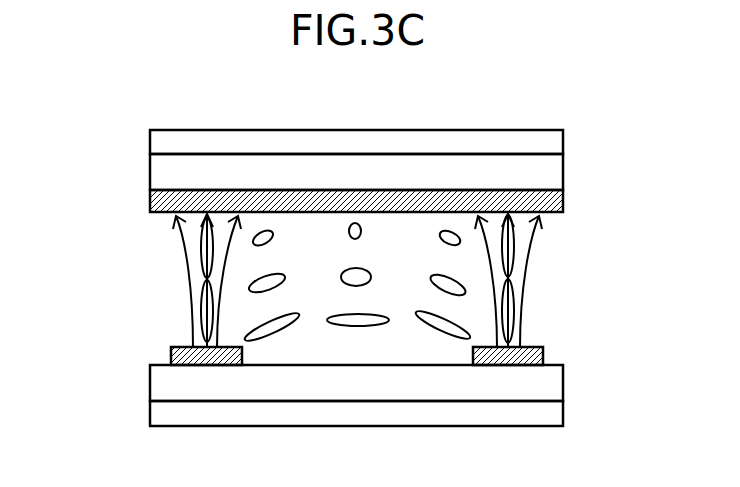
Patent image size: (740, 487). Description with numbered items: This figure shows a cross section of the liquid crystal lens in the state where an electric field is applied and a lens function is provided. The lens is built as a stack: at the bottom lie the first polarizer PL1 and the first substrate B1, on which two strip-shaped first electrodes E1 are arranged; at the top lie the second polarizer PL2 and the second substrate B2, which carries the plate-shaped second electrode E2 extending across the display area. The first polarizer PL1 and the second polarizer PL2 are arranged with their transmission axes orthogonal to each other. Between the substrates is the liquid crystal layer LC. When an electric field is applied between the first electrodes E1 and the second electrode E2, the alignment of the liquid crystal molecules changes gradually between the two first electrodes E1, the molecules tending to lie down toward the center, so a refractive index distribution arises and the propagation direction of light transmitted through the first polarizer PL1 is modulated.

The second polarizer PL2 is at (560, 140).
The second substrate B2 is at (560, 176).
The second electrode E2 is at (560, 203).
The liquid crystal layer LC is at (170, 276).
The first electrodes E1 is at (170, 355).
The first substrate B1 is at (560, 379).
The first polarizer PL1 is at (560, 412).